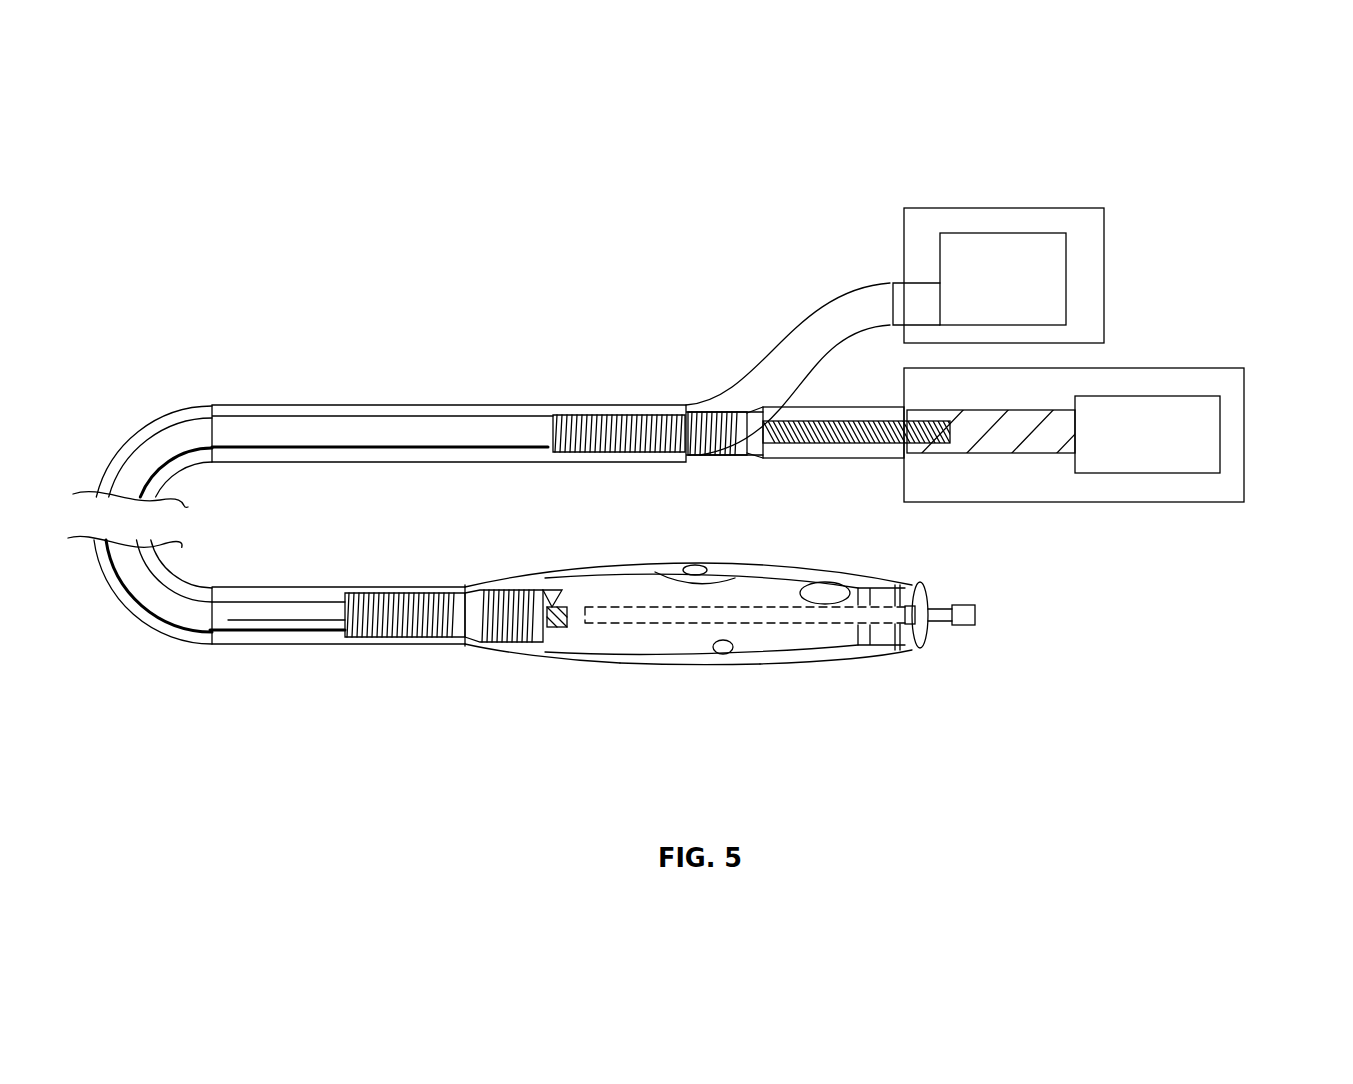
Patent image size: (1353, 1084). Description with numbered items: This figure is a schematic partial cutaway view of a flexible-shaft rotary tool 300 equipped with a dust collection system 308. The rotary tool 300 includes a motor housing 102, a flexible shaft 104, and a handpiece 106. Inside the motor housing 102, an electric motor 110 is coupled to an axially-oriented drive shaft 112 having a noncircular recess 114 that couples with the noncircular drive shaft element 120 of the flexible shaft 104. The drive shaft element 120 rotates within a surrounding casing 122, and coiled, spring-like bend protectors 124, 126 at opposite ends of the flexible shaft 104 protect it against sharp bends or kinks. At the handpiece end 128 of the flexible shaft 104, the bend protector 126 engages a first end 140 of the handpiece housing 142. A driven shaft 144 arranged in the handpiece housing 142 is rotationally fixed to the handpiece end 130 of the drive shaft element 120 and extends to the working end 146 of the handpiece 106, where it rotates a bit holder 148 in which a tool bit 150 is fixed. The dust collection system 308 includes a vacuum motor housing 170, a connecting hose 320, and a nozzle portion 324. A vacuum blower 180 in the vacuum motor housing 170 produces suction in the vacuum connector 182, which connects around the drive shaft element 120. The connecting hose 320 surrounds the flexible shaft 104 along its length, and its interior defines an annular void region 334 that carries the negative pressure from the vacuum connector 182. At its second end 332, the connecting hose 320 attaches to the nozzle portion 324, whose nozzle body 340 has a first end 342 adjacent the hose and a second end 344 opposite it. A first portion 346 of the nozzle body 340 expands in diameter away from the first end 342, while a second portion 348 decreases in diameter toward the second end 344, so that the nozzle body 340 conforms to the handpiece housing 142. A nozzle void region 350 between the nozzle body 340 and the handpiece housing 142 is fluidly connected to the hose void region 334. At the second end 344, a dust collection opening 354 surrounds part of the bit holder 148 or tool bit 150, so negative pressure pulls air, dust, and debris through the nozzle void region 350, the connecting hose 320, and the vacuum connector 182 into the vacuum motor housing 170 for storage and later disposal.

The rotary tool 300 is at (305, 318).
The dust collection system 308 is at (545, 250).
The connecting hose 320 is at (470, 405).
The casing 122 is at (383, 440).
The second end 332 is at (835, 282).
The flexible shaft 104 is at (300, 475).
The bend protector 124 is at (700, 455).
The noncircular recess 114 is at (866, 427).
The drive shaft element 120 is at (917, 435).
The vacuum motor housing 170 is at (1010, 208).
The vacuum blower 180 is at (1062, 233).
The vacuum connector 182 is at (893, 283).
The motor housing 102 is at (1272, 512).
The electric motor 110 is at (1143, 455).
The drive shaft 112 is at (1045, 450).
The nozzle portion 324 is at (545, 672).
The void region 334 is at (268, 640).
The handpiece end 128 is at (470, 577).
The first end 342 is at (465, 655).
The bend protector 126 is at (512, 590).
The handpiece 106 is at (683, 538).
The first portion 346 is at (575, 678).
The nozzle body 340 is at (700, 665).
The second portion 348 is at (820, 677).
The handpiece end 130 is at (558, 600).
The first end 140 is at (555, 577).
The driven shaft 144 is at (645, 607).
The handpiece housing 142 is at (790, 575).
The nozzle void region 350 is at (858, 660).
The working end 146 is at (887, 565).
The bit holder 148 is at (918, 590).
The second end 344 is at (928, 668).
The dust collection opening 354 is at (942, 638).
The tool bit 150 is at (965, 605).